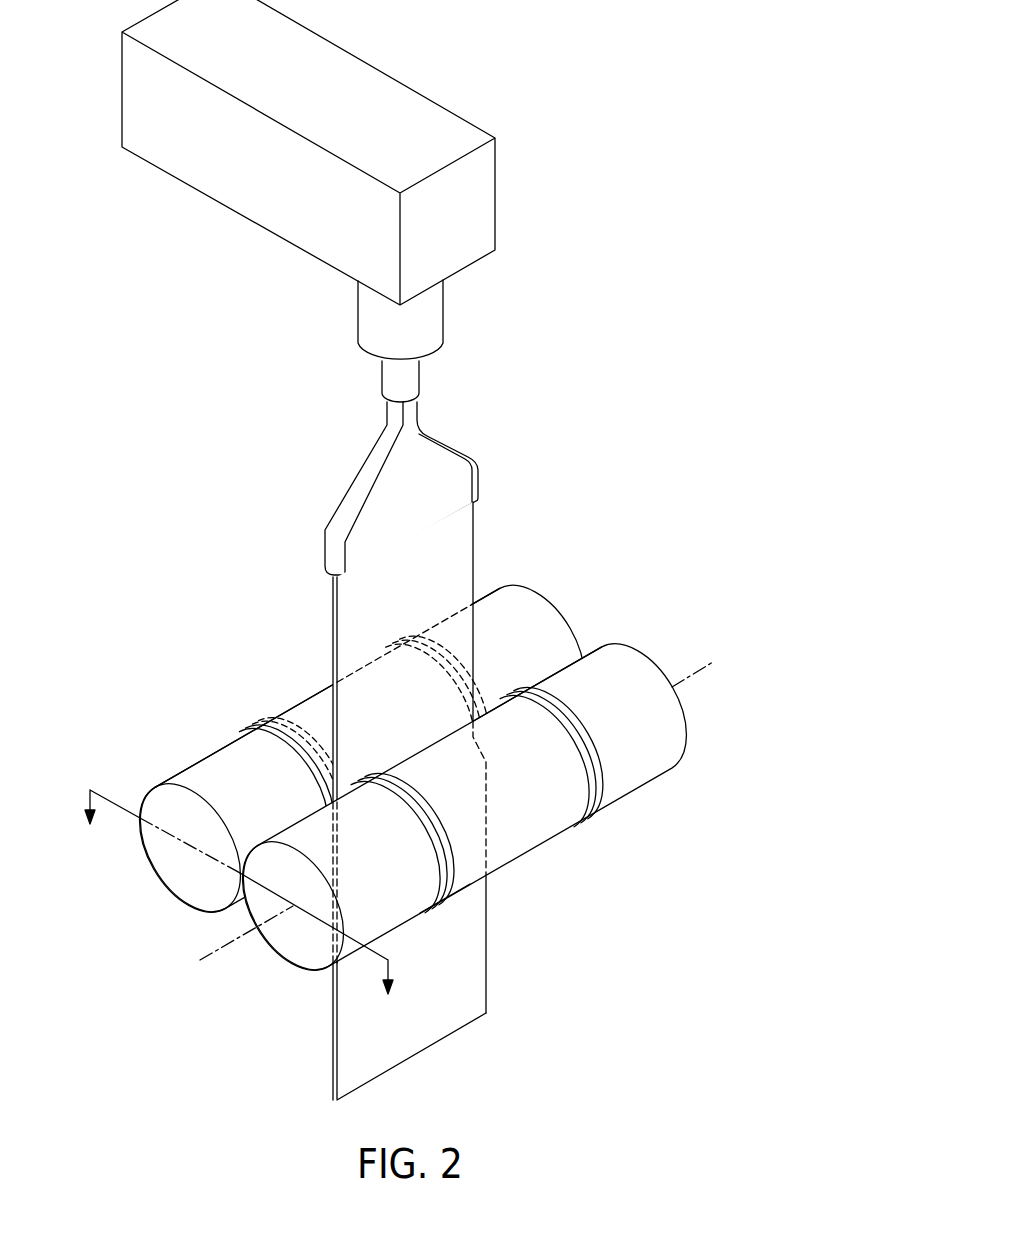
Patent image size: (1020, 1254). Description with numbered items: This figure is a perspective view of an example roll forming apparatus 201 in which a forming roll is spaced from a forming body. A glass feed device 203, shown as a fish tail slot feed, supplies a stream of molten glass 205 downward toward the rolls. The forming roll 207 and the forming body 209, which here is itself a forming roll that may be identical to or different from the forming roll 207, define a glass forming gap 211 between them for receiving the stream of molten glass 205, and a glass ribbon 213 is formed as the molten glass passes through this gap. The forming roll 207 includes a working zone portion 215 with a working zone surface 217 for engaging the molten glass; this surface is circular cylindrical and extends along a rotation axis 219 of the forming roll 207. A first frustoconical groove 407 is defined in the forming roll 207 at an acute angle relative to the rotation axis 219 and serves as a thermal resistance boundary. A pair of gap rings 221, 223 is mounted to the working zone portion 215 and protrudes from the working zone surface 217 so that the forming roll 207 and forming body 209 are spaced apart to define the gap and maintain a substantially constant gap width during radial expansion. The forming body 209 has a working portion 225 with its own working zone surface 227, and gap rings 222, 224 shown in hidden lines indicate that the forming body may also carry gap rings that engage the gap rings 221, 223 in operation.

The roll forming apparatus 201 is at (424, 550).
The glass feed device 203 is at (352, 488).
The stream of molten glass 205 is at (405, 801).
The forming roll 207 is at (283, 957).
The forming body 209 is at (176, 898).
The glass forming gap 211 is at (486, 697).
The glass ribbon 213 is at (332, 1064).
The working zone portion 215 is at (539, 862).
The working zone surface 217 is at (517, 787).
The rotation axis 219 is at (710, 667).
The gap ring 221 is at (438, 903).
The gap ring 222 is at (228, 734).
The gap ring 223 is at (612, 803).
The gap ring 224 is at (407, 622).
The working portion 225 is at (254, 694).
The working zone surface 227 is at (335, 731).
The first frustoconical groove 407 is at (402, 790).